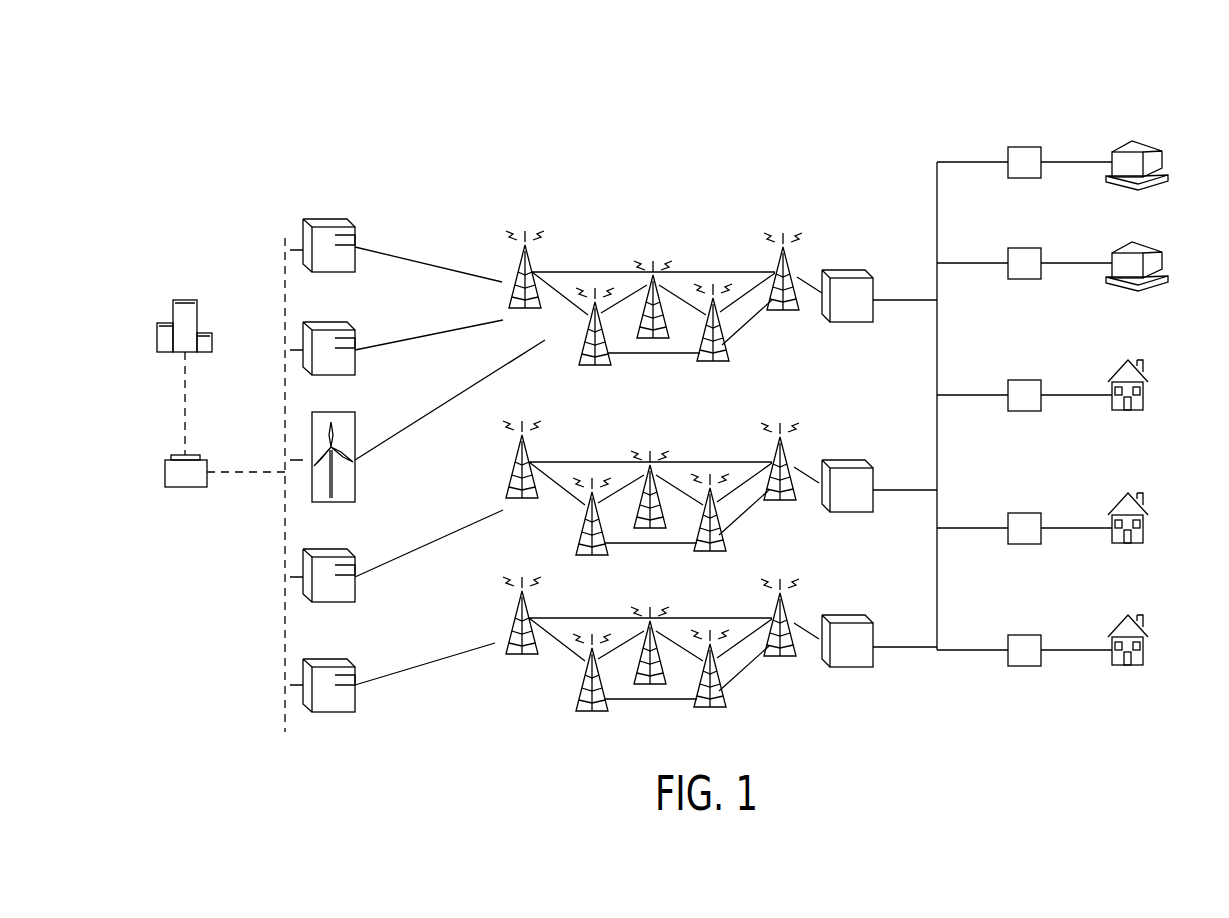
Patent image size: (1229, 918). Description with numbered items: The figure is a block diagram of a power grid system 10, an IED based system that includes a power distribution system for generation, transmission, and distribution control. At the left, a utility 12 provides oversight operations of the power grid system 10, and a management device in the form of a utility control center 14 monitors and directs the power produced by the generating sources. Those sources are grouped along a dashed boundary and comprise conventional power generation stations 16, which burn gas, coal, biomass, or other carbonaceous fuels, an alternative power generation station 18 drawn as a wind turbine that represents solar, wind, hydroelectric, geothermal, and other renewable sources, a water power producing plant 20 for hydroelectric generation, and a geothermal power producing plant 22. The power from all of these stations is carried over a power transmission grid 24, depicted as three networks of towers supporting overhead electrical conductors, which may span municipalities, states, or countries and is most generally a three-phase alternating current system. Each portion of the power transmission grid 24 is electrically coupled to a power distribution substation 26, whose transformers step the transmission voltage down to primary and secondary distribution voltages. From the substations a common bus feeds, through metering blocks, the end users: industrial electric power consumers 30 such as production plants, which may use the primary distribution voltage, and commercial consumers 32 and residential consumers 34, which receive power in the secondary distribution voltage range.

The power grid system 10 is at (255, 140).
The utility 12 is at (190, 300).
The utility control center 14 is at (185, 487).
The power generation station 16 is at (323, 219).
The alternative power generation station 18 is at (330, 412).
The water power producing plant 20 is at (323, 549).
The geothermal power producing plant 22 is at (323, 659).
The power transmission grid 24 is at (605, 235).
The power distribution substation 26 is at (843, 270).
The industrial electric power consumer 30 is at (1025, 147).
The commercial consumer 32 is at (1148, 246).
The residential consumer 34 is at (1118, 372).